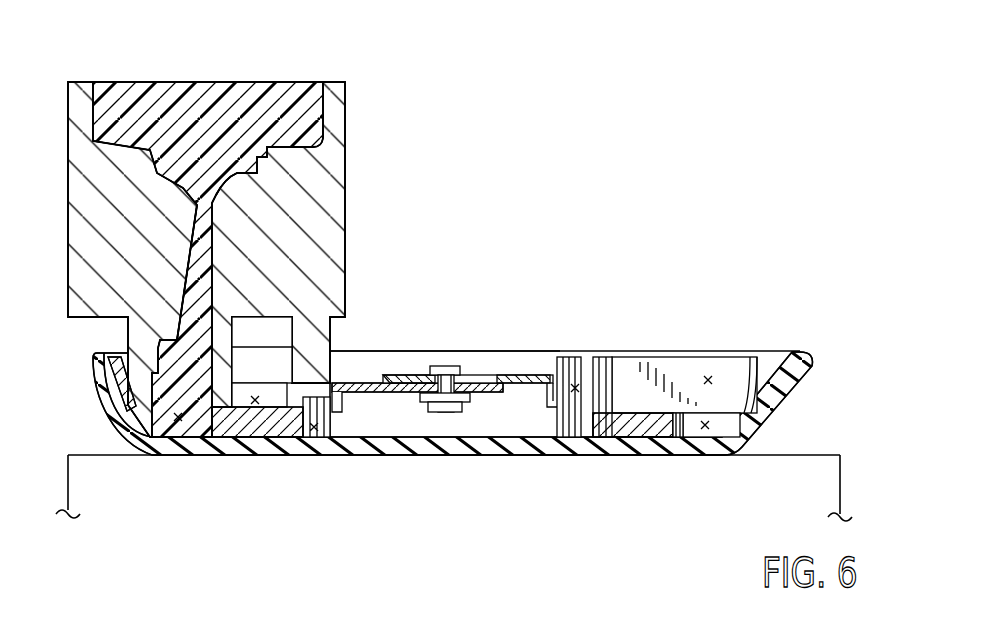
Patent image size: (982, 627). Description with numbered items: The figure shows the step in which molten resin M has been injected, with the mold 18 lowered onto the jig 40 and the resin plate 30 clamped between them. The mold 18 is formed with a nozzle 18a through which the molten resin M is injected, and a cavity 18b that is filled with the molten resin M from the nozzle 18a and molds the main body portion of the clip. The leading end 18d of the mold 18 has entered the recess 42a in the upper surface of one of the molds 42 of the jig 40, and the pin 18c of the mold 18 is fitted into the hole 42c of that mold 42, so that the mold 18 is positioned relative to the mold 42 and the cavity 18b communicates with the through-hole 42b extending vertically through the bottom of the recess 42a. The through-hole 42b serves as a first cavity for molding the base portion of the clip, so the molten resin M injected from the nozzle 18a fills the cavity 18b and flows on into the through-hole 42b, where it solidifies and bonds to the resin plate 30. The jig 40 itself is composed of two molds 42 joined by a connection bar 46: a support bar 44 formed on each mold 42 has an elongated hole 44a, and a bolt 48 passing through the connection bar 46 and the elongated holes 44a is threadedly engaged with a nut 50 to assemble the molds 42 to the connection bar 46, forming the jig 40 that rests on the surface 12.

The floor surface 12 is at (802, 455).
The mold 18 is at (346, 125).
The nozzle 18a is at (228, 187).
The cavity 18b is at (192, 346).
The pin 18c is at (301, 442).
The leading end 18d is at (136, 396).
The molten resin M is at (247, 96).
The resin plate 30 is at (548, 372).
The jig 40 is at (503, 356).
The mold 42 is at (268, 378).
The recess 42a is at (255, 404).
The through-hole 42b is at (178, 421).
The hole 42c is at (316, 437).
The support bar 44 is at (387, 375).
The elongated hole 44a is at (417, 375).
The connection bar 46 is at (460, 412).
The bolt 48 is at (446, 366).
The nut 50 is at (438, 402).